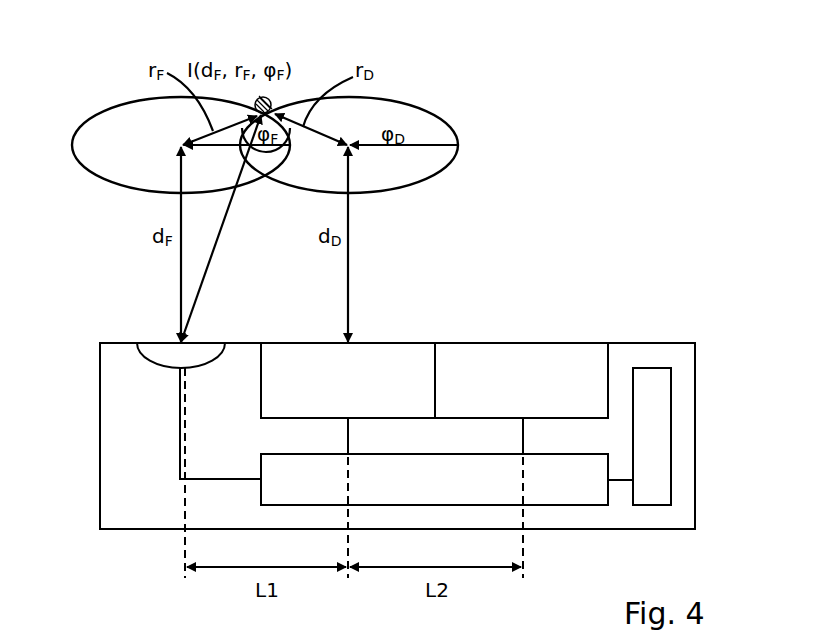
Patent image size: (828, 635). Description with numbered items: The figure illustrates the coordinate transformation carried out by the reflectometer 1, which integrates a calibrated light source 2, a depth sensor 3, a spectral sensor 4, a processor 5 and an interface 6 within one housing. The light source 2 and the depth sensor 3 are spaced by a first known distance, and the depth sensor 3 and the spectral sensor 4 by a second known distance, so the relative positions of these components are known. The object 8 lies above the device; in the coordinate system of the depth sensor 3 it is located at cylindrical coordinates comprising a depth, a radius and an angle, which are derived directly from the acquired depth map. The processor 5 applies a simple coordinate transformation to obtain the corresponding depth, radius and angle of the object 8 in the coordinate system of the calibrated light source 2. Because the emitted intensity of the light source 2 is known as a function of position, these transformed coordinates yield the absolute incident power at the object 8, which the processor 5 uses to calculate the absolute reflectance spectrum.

The reflectometer 1 is at (100, 440).
The calibrated light source 2 is at (151, 343).
The depth sensor 3 is at (348, 380).
The spectral sensor 4 is at (521, 380).
The processor 5 is at (434, 479).
The interface 6 is at (650, 368).
The object 8 is at (273, 100).